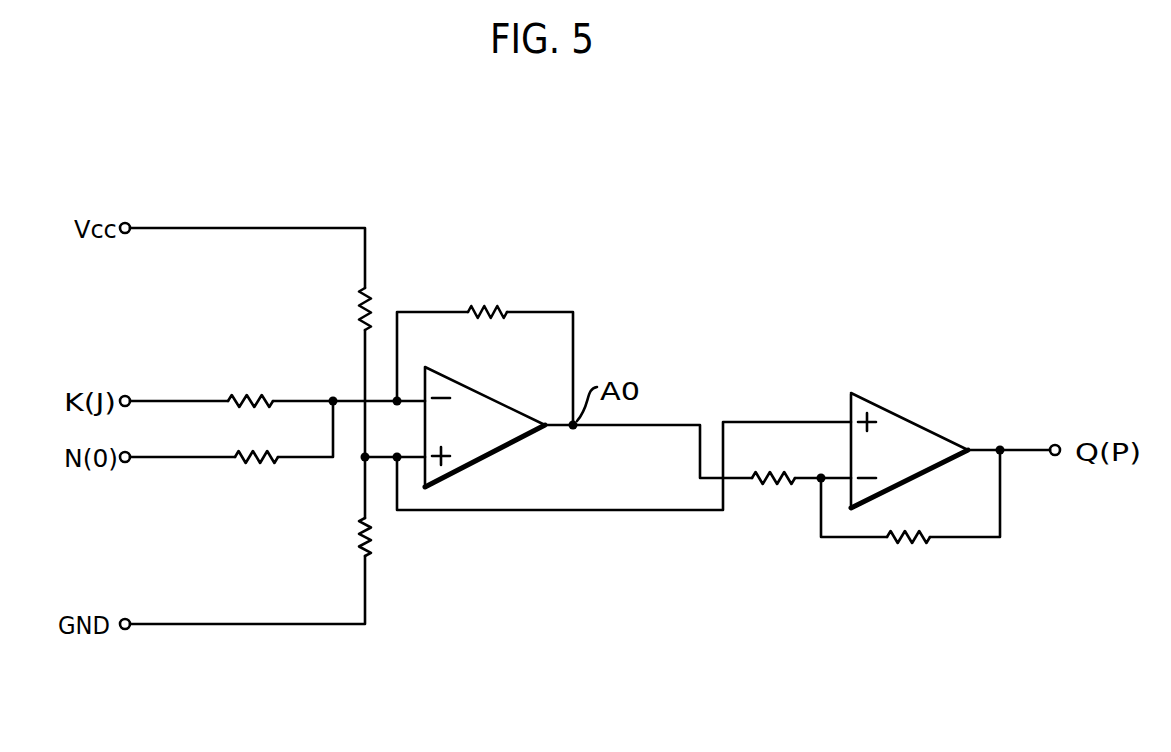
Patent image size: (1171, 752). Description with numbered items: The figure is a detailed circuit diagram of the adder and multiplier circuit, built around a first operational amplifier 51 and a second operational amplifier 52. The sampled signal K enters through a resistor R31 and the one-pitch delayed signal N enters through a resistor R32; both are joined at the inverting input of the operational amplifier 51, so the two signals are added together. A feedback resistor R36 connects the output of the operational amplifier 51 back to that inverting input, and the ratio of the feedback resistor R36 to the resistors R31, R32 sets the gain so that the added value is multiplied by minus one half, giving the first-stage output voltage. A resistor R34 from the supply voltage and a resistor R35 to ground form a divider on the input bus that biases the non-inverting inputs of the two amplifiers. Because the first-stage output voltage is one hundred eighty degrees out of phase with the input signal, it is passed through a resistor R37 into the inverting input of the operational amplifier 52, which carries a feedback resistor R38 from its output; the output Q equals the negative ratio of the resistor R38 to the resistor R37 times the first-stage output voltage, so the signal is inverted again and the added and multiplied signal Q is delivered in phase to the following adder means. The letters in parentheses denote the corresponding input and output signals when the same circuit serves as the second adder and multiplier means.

The input resistor R31 is at (253, 386).
The input resistor R32 is at (259, 443).
The bias resistor R34 is at (337, 309).
The bias resistor R35 is at (393, 537).
The feedback resistor R36 is at (489, 298).
The input resistor R37 is at (773, 465).
The feedback resistor R38 is at (911, 524).
The operational amplifier 51 is at (456, 382).
The operational amplifier 52 is at (908, 421).